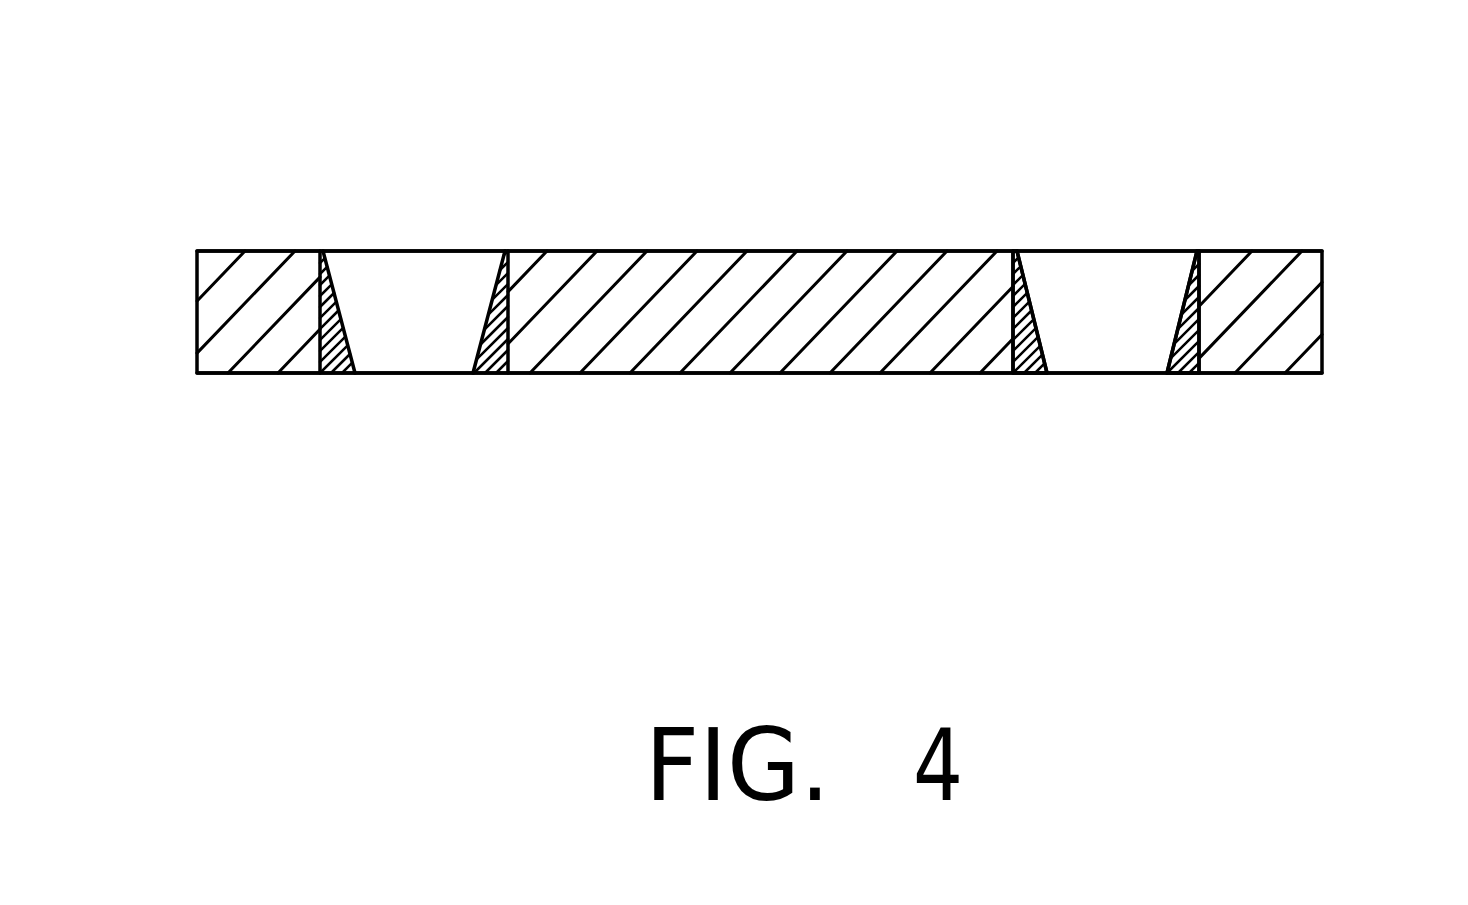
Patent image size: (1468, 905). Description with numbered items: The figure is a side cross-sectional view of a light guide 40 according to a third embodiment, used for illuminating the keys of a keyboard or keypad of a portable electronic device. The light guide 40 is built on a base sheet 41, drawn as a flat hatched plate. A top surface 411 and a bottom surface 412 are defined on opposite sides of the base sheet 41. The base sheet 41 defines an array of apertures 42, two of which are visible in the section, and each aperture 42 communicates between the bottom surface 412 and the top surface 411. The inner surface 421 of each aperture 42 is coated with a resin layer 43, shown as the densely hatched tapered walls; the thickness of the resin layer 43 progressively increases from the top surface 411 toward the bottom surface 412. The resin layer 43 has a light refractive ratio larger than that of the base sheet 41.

The light guide 40 is at (786, 82).
The base sheet 41 is at (1293, 332).
The top surface 411 is at (302, 251).
The bottom surface 412 is at (302, 373).
The apertures 42 is at (1128, 308).
The inner surface 421 is at (1012, 319).
The resin layer 43 is at (1182, 360).